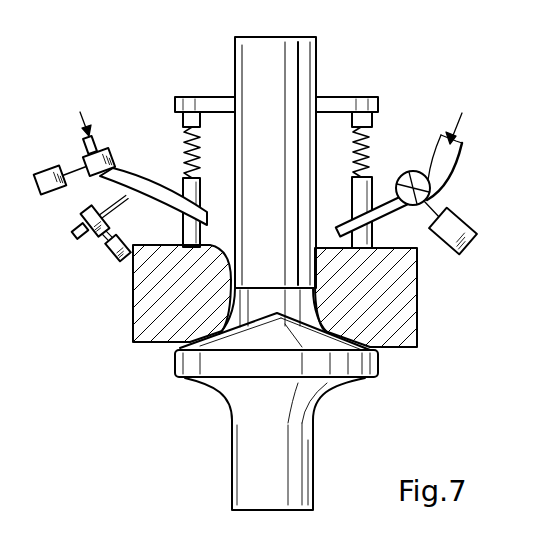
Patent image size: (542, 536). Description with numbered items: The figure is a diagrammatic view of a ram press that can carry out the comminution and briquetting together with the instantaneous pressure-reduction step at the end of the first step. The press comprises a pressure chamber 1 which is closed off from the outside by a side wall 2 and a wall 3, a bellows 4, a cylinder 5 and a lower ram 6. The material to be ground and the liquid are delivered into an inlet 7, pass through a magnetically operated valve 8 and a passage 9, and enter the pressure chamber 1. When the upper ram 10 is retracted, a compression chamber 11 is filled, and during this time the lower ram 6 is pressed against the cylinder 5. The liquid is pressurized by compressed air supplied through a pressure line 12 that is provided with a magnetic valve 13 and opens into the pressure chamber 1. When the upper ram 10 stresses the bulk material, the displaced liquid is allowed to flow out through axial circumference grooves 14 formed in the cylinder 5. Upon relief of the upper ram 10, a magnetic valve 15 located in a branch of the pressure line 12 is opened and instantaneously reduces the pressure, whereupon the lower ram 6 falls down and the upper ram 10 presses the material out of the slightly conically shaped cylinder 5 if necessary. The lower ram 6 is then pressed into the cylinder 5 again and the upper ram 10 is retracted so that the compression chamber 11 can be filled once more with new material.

The pressure chamber 1 is at (335, 140).
The side wall 2 is at (370, 234).
The wall 3 is at (338, 108).
The bellows 4 is at (368, 150).
The cylinder 5 is at (403, 313).
The lower ram 6 is at (298, 458).
The inlet 7 is at (461, 140).
The magnetically operated valve 8 is at (432, 195).
The passage 9 is at (393, 203).
The upper ram 10 is at (307, 57).
The compression chamber 11 is at (308, 315).
The pressure line 12 is at (143, 200).
The magnetic valve 13 is at (113, 152).
The axial circumference grooves 14 is at (177, 247).
The magnetic valve 15 is at (95, 237).